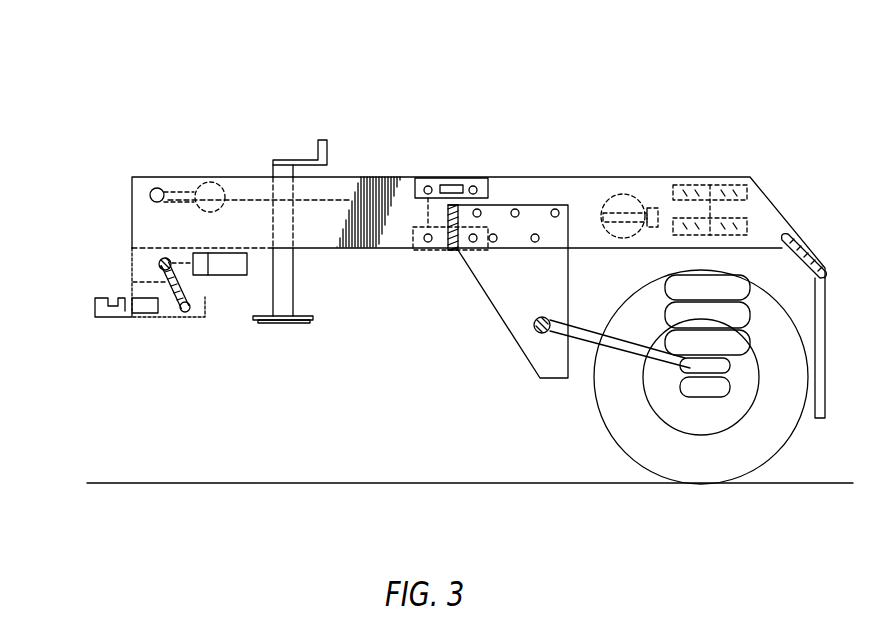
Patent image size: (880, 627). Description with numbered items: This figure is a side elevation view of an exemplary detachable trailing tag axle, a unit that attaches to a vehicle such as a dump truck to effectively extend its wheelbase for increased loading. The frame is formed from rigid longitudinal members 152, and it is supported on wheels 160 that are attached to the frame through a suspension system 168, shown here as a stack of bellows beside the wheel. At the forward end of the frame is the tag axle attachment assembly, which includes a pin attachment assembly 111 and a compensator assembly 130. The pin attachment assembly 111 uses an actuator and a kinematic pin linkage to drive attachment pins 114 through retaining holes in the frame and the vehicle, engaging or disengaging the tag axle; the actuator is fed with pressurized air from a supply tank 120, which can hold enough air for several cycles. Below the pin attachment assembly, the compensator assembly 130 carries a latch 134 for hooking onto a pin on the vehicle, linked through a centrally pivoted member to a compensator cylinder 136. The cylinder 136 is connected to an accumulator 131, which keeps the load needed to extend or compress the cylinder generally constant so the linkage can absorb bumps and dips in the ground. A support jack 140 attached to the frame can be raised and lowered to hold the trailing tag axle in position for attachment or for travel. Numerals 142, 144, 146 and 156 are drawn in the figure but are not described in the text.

The pin attachment assembly 111 is at (187, 177).
The attachment pins 114 is at (180, 190).
The supply tank 120 is at (400, 188).
The compensator assembly 130 is at (133, 282).
The accumulator 131 is at (183, 315).
The latch 134 is at (97, 311).
The compensator cylinder 136 is at (273, 177).
The support jack 140 is at (286, 288).
The upper bracket 142 is at (300, 158).
The spring 144 is at (293, 263).
The foot pad 146 is at (293, 325).
The longitudinal members 152 is at (547, 180).
The pivot arm 156 is at (547, 314).
The wheels 160 is at (738, 452).
The suspension system 168 is at (682, 372).